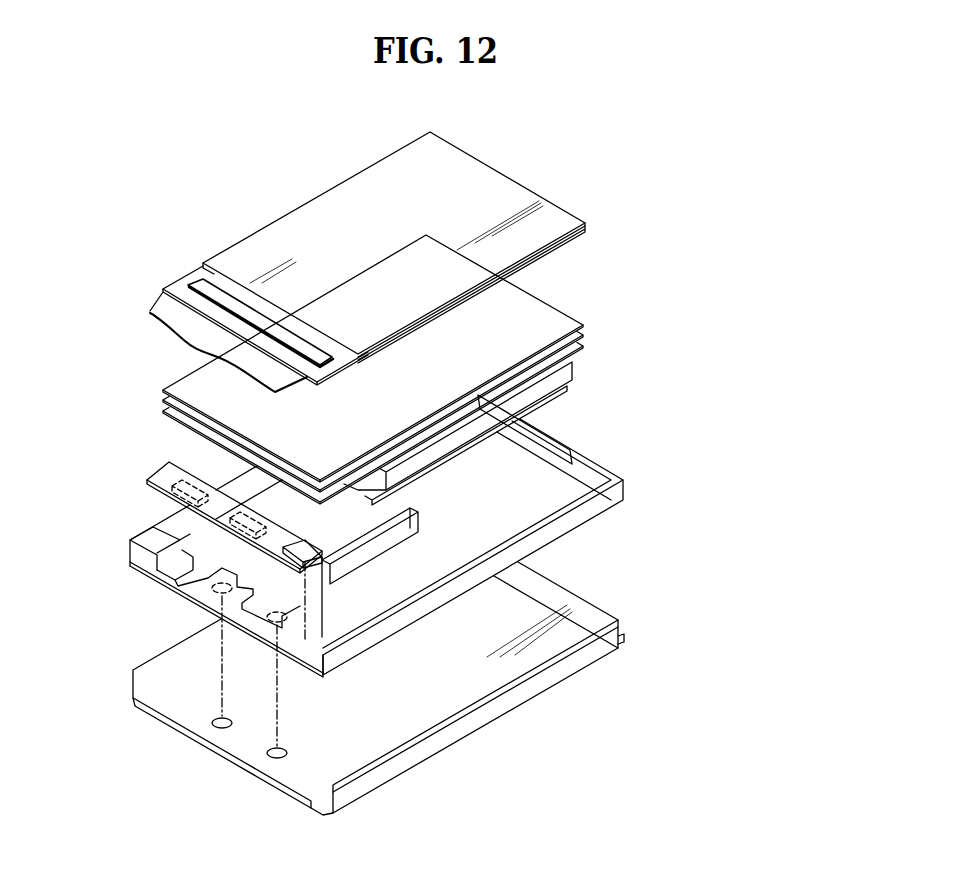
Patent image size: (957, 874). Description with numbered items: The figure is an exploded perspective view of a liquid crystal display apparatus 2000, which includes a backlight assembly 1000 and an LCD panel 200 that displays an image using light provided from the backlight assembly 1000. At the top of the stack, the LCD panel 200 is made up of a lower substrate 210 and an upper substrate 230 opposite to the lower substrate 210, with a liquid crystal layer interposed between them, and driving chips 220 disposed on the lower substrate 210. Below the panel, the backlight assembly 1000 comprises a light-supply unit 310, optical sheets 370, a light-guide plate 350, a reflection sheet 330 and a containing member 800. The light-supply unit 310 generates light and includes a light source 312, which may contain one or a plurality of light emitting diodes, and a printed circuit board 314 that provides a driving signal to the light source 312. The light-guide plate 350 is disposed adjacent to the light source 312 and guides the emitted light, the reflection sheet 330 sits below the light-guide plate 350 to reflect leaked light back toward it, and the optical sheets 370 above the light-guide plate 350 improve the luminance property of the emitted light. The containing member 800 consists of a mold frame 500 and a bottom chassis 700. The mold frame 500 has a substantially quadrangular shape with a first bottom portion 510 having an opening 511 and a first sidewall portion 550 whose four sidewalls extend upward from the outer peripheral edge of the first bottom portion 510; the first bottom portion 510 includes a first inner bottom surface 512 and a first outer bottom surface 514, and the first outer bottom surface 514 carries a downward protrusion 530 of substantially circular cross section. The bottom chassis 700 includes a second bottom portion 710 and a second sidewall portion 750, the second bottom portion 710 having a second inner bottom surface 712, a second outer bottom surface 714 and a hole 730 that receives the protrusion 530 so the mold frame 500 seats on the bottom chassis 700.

The LCD apparatus 2000 is at (231, 136).
The LCD panel 200 is at (527, 175).
The upper substrate 230 is at (563, 220).
The lower substrate 210 is at (590, 231).
The driving chips 220 is at (197, 290).
The optical sheets 370 is at (588, 323).
The light-guide plate 350 is at (566, 374).
The reflection sheet 330 is at (568, 387).
The light-supply unit 310 is at (73, 443).
The light source 312 is at (167, 463).
The printed circuit board 314 is at (148, 470).
The backlight assembly 1000 is at (788, 628).
The containing member 800 is at (735, 488).
The mold frame 500 is at (652, 491).
The first sidewall portion 550 is at (543, 448).
The opening 511 is at (546, 493).
The first bottom portion 510 is at (73, 590).
The first inner bottom surface 512 is at (168, 573).
The first outer bottom surface 514 is at (177, 577).
The protrusion 530 is at (220, 591).
The bottom chassis 700 is at (652, 629).
The second sidewall portion 750 is at (533, 687).
The second bottom portion 710 is at (547, 743).
The second inner bottom surface 712 is at (446, 703).
The second outer bottom surface 714 is at (449, 753).
The hole 730 is at (263, 755).